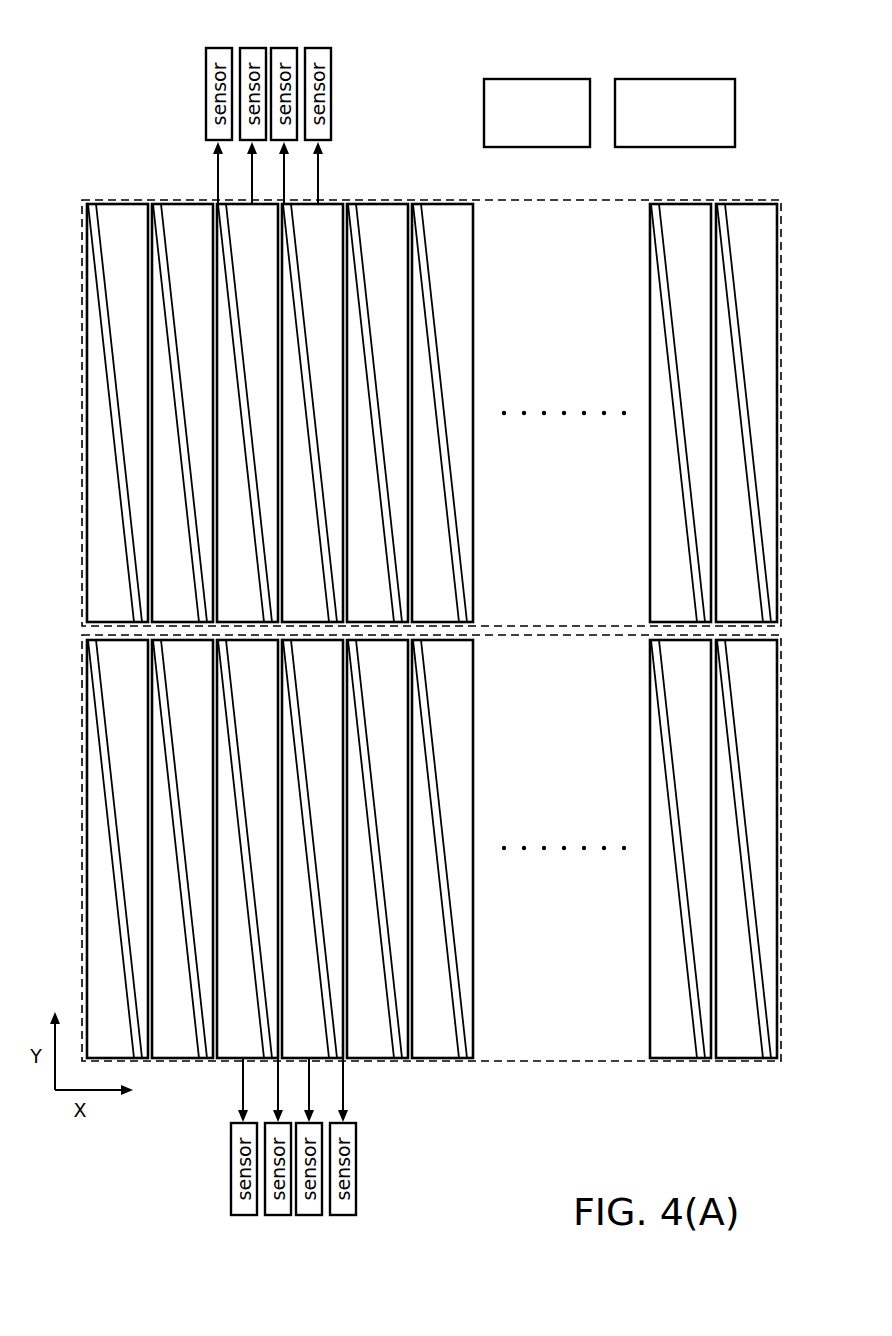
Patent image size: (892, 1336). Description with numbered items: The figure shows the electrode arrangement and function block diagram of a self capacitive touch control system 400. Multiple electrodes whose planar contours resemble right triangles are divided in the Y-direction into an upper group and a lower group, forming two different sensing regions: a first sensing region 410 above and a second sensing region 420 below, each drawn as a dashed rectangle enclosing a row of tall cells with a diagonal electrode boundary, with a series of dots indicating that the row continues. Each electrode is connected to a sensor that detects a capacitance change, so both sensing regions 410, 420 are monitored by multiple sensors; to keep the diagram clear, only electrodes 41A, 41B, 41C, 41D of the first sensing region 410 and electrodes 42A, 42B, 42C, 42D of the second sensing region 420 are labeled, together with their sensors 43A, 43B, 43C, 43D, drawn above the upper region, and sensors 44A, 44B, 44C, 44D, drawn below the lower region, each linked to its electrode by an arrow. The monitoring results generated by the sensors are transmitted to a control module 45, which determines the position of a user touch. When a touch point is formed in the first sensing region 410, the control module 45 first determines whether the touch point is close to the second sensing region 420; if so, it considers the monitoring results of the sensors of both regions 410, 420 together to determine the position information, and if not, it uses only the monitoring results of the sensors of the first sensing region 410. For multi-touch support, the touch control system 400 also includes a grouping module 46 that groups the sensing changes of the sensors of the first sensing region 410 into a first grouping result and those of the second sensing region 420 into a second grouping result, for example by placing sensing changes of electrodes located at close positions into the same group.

The touch control system 400 is at (786, 17).
The first sensing region 410 is at (781, 274).
The second sensing region 420 is at (781, 710).
The electrode 41A is at (221, 230).
The electrode 41B is at (237, 212).
The electrode 41C is at (296, 204).
The electrode 41D is at (334, 209).
The electrode 42A is at (231, 1050).
The electrode 42B is at (273, 1043).
The electrode 42C is at (327, 1060).
The electrode 42D is at (340, 1032).
The sensor 43A is at (214, 48).
The sensor 43B is at (250, 48).
The sensor 43C is at (288, 48).
The sensor 43D is at (321, 48).
The sensor 44A is at (238, 1214).
The sensor 44B is at (278, 1214).
The sensor 44C is at (309, 1214).
The sensor 44D is at (350, 1214).
The control module 45 is at (548, 79).
The grouping module 46 is at (690, 79).